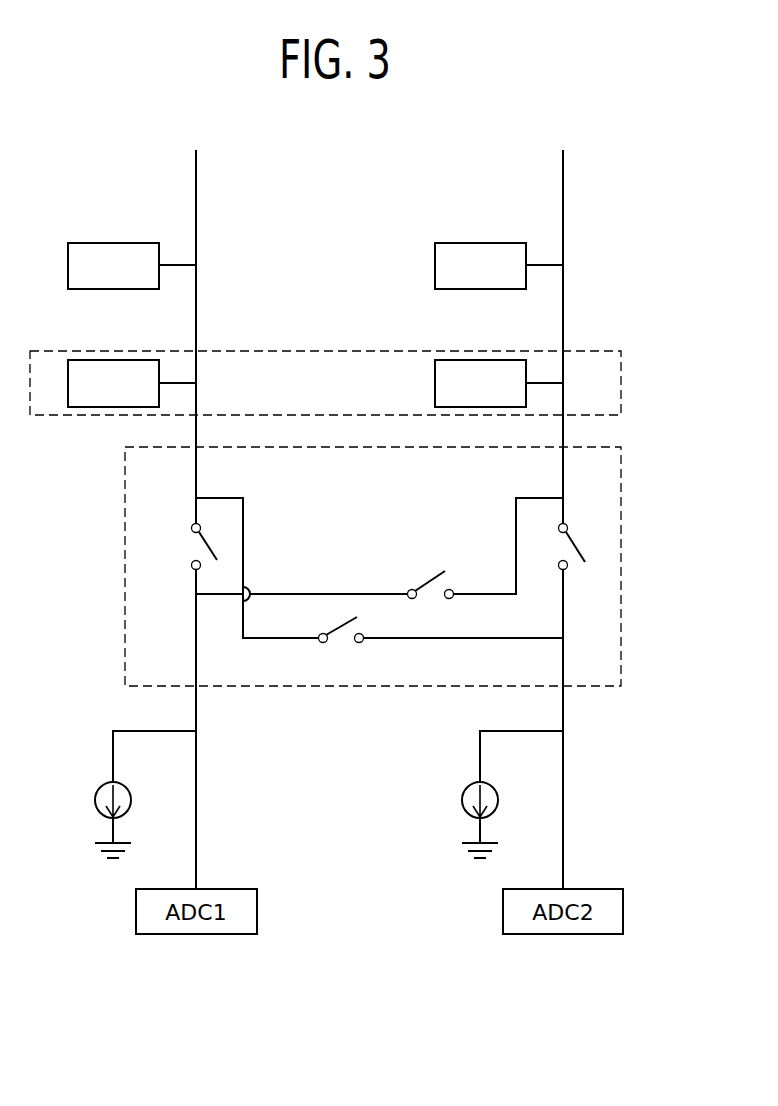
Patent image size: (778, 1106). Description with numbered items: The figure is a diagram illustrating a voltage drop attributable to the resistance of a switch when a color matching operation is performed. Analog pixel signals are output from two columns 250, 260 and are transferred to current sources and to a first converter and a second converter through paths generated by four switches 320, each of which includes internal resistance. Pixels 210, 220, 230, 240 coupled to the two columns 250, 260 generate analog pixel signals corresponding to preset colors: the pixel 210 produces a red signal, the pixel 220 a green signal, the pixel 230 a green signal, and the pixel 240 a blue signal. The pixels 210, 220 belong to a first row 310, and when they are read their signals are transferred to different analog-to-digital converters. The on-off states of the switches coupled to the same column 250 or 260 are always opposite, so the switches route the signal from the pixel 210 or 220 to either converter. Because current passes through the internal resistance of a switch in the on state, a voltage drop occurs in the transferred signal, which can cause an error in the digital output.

The pixel 210 is at (138, 360).
The pixel 220 is at (505, 360).
The pixel 230 is at (138, 243).
The pixel 240 is at (505, 243).
The column 250 is at (197, 174).
The column 260 is at (564, 174).
The first row 310 is at (621, 365).
The switches 320 is at (621, 510).